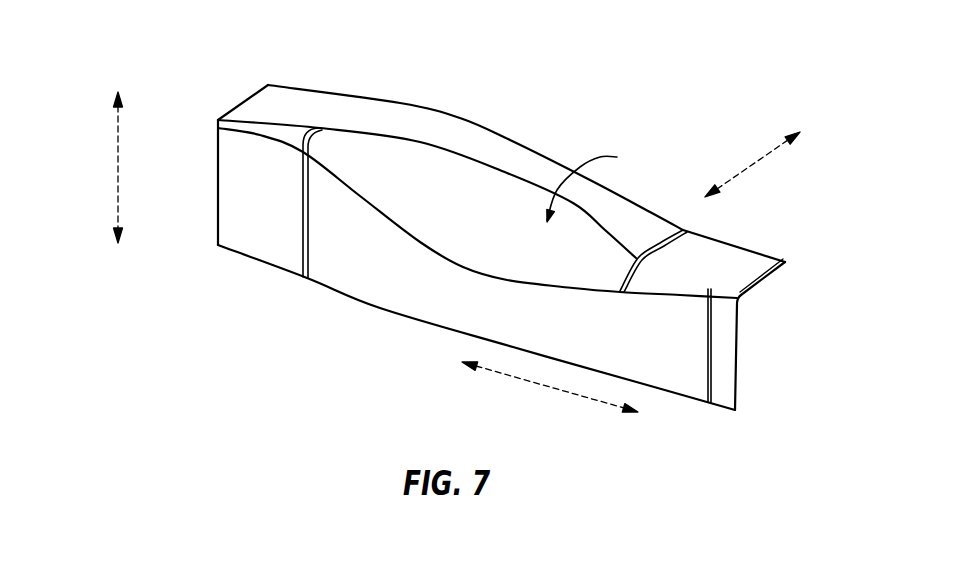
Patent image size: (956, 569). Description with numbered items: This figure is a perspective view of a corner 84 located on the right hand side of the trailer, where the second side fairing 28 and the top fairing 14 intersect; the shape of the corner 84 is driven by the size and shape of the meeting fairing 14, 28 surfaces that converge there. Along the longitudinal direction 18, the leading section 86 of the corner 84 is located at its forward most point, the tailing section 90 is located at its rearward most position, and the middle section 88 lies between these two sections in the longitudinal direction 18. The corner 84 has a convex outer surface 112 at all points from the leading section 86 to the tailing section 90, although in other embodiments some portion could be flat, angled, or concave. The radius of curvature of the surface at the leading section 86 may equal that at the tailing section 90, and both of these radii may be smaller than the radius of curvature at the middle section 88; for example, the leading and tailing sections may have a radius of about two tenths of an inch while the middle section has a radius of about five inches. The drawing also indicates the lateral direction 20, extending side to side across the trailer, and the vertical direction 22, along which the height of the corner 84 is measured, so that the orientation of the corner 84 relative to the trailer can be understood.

The top fairing 14 is at (510, 139).
The longitudinal direction 18 is at (548, 386).
The lateral direction 20 is at (752, 165).
The vertical direction 22 is at (118, 168).
The second side fairing 28 is at (275, 250).
The corner 84 is at (430, 236).
The leading section 86 is at (737, 300).
The middle section 88 is at (465, 197).
The tailing section 90 is at (218, 120).
The outer surface 112 is at (607, 182).